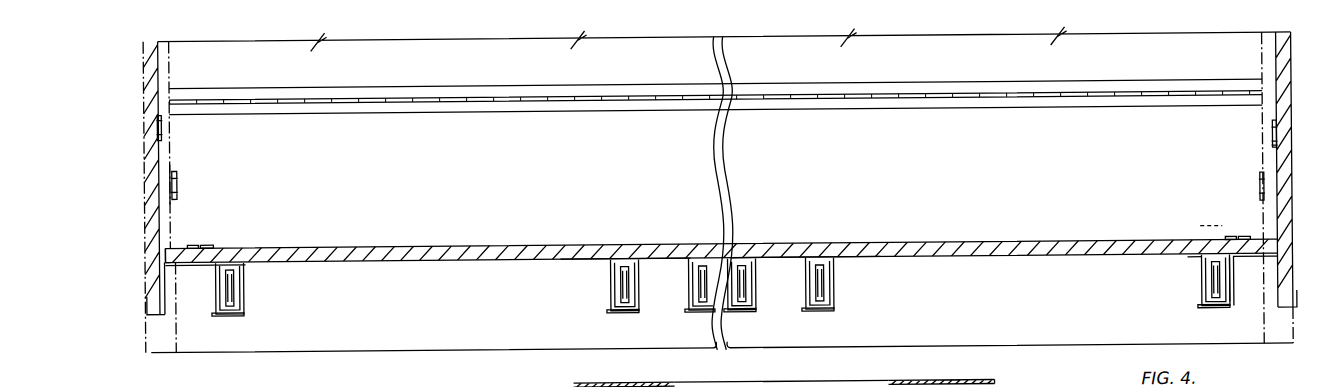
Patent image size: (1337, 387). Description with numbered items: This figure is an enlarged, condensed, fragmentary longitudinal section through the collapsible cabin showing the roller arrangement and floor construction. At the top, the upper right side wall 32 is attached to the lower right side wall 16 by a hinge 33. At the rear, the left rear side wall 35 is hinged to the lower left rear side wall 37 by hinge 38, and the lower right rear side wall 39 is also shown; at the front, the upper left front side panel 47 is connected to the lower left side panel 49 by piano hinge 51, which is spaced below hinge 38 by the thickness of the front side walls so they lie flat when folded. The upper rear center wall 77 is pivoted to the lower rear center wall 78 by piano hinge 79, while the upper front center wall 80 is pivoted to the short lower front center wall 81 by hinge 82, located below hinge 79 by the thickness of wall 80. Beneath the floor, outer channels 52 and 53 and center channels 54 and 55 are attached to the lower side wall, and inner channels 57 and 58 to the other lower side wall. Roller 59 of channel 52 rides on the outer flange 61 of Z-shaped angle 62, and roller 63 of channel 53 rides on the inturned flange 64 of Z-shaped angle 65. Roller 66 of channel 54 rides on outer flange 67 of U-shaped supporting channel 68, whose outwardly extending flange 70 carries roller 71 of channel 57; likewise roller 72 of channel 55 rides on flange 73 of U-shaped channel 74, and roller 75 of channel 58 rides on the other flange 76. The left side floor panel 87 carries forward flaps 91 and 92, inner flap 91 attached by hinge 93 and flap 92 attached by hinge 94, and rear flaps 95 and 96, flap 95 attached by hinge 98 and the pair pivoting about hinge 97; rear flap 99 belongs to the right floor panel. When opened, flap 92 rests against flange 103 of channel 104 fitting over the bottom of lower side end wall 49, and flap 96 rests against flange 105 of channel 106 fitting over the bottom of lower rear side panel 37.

The lower left side wall 16 is at (812, 186).
The upper right side wall 32 is at (979, 67).
The hinge 33 is at (1110, 101).
The left rear side wall 35 is at (158, 89).
The lower left rear side wall 37 is at (677, 384).
The hinge 38 is at (161, 124).
The lower right rear side wall 39 is at (950, 386).
The upper left front side panel 47 is at (1283, 105).
The lower left side panel 49 is at (1284, 155).
The piano hinge 51 is at (1272, 147).
The outer channel 52 is at (1201, 272).
The outer channel 53 is at (243, 276).
The center channel 54 is at (753, 272).
The center channel 55 is at (610, 281).
The inner channel 57 is at (833, 281).
The inner channel 58 is at (706, 256).
The roller 59 is at (1211, 296).
The outer flange 61 is at (1215, 312).
The Z-shaped angle 62 is at (1232, 288).
The roller 63 is at (233, 296).
The inturned flange 64 is at (228, 312).
The Z-shaped angle 65 is at (214, 276).
The roller 66 is at (745, 304).
The outer flange 67 is at (741, 312).
The U-shaped supporting channel 68 is at (788, 257).
The outwardly extending flange 70 is at (818, 312).
The roller 71 is at (823, 301).
The roller 72 is at (620, 303).
The flange 73 is at (618, 312).
The U-shaped channel 74 is at (648, 256).
The roller 75 is at (693, 309).
The flange 76 is at (703, 312).
The upper rear center wall 77 is at (170, 148).
The lower rear center wall 78 is at (788, 386).
The piano hinge 79 is at (178, 187).
The upper front center wall 80 is at (1270, 126).
The lower front center wall 81 is at (1272, 222).
The hinge 82 is at (1261, 183).
The left side floor panel 87 is at (1072, 244).
The inner flap 91 is at (1203, 244).
The flap 92 is at (1273, 252).
The hinge 93 is at (1195, 261).
The hinge 94 is at (1237, 242).
The flap 95 is at (230, 250).
The flap 96 is at (165, 254).
The hinge 97 is at (245, 259).
The hinge 98 is at (192, 242).
The rear flap 99 is at (994, 386).
The flange 103 is at (1256, 280).
The channel 104 is at (1290, 316).
The flange 105 is at (176, 263).
The channel 106 is at (157, 307).